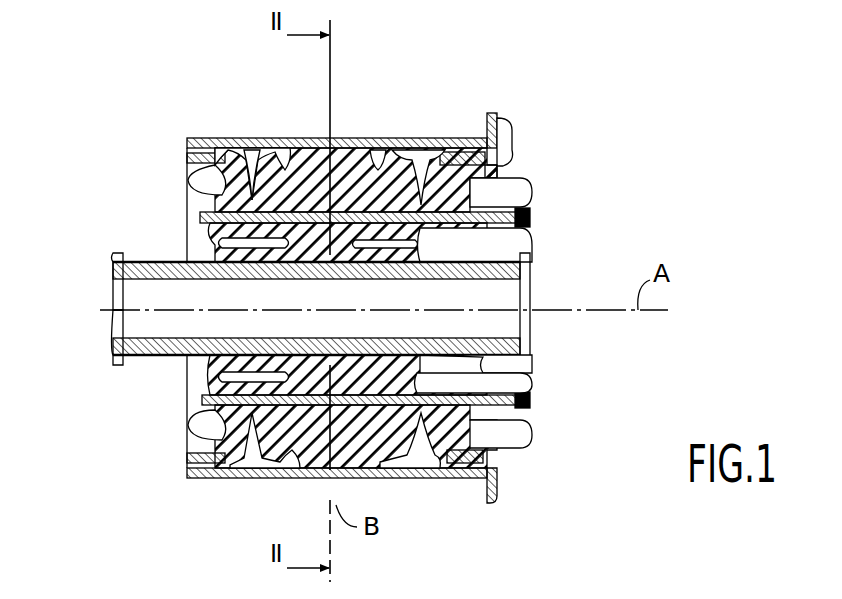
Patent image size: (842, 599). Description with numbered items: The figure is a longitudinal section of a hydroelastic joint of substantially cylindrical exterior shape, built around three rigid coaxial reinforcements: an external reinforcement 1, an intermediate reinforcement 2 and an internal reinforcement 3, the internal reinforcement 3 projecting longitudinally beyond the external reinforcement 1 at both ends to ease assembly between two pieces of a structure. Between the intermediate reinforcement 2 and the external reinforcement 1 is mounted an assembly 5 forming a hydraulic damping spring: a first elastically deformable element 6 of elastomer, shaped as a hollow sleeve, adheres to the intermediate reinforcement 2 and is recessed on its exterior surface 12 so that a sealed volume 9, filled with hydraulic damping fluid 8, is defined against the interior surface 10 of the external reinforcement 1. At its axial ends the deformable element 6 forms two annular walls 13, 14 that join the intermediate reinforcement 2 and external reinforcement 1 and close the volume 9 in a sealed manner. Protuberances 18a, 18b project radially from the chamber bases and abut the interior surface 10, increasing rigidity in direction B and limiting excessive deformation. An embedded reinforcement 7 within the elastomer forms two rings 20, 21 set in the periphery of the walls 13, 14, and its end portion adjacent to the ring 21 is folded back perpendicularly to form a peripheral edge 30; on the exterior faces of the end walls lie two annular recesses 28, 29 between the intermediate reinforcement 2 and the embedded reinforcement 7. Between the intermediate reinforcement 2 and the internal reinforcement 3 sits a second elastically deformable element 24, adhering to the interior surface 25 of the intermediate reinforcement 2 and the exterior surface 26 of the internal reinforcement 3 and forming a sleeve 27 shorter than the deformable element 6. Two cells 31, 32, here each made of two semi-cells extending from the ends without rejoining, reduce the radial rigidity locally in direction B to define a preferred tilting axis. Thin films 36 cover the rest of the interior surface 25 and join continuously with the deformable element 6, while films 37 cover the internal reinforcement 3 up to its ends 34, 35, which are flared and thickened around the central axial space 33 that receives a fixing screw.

The external reinforcement 1 is at (212, 136).
The intermediate reinforcement 2 is at (210, 200).
The internal reinforcement 3 is at (160, 281).
The assembly 5 is at (512, 180).
The first elastically deformable element 6 is at (512, 150).
The embedded reinforcement 7 is at (448, 150).
The hydraulic damping fluid 8 is at (250, 452).
The sealed volume 9 is at (245, 160).
The interior surface 10 is at (420, 165).
The exterior surface 12 is at (257, 165).
The annular wall 13 is at (205, 178).
The annular wall 14 is at (470, 185).
The protuberance 18a is at (378, 150).
The protuberance 18b is at (395, 470).
The ring 20 is at (190, 158).
The ring 21 is at (500, 452).
The second elastically deformable element 24 is at (218, 248).
The interior surface 25 is at (425, 242).
The exterior surface 26 is at (420, 372).
The sleeve 27 is at (312, 235).
The annular recess 28 is at (215, 415).
The annular recess 29 is at (470, 430).
The peripheral edge 30 is at (492, 113).
The cell 31 is at (225, 237).
The cell 32 is at (205, 378).
The central axial space 33 is at (118, 330).
The end 34 is at (115, 265).
The end 35 is at (525, 332).
The film 36 is at (515, 216).
The film 37 is at (455, 360).